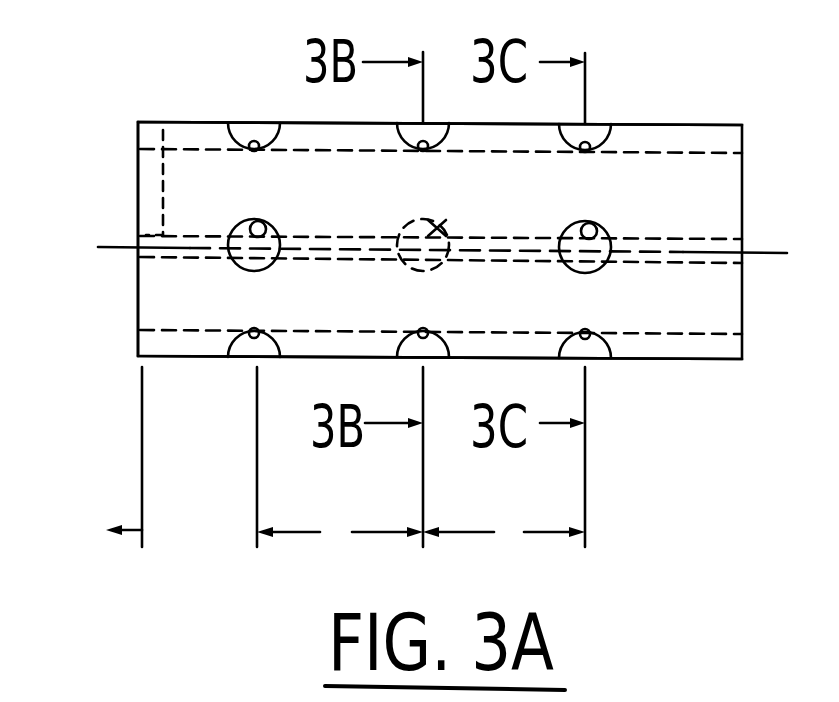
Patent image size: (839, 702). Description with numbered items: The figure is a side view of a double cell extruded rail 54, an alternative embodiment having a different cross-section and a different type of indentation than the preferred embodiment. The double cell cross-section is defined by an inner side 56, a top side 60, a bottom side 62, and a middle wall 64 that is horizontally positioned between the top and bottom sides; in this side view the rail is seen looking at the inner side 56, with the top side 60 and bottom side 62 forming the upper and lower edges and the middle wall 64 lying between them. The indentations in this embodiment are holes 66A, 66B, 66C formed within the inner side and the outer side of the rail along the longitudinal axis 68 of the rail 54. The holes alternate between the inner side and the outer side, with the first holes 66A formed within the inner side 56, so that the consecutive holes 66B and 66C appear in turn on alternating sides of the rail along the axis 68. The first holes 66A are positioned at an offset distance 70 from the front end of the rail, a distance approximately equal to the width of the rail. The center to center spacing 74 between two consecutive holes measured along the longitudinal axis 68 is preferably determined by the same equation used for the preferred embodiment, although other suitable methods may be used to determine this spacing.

The double cell extruded rail 54 is at (660, 116).
The inner side 56 is at (157, 283).
The top side 60 is at (313, 122).
The bottom side 62 is at (303, 353).
The middle wall 64 is at (156, 118).
The first holes 66A is at (260, 330).
The holes 66B is at (430, 330).
The holes 66C is at (600, 333).
The longitudinal axis 68 is at (117, 247).
The offset distance (OD) 70 is at (188, 552).
The center to center spacing (S) 74 is at (497, 550).